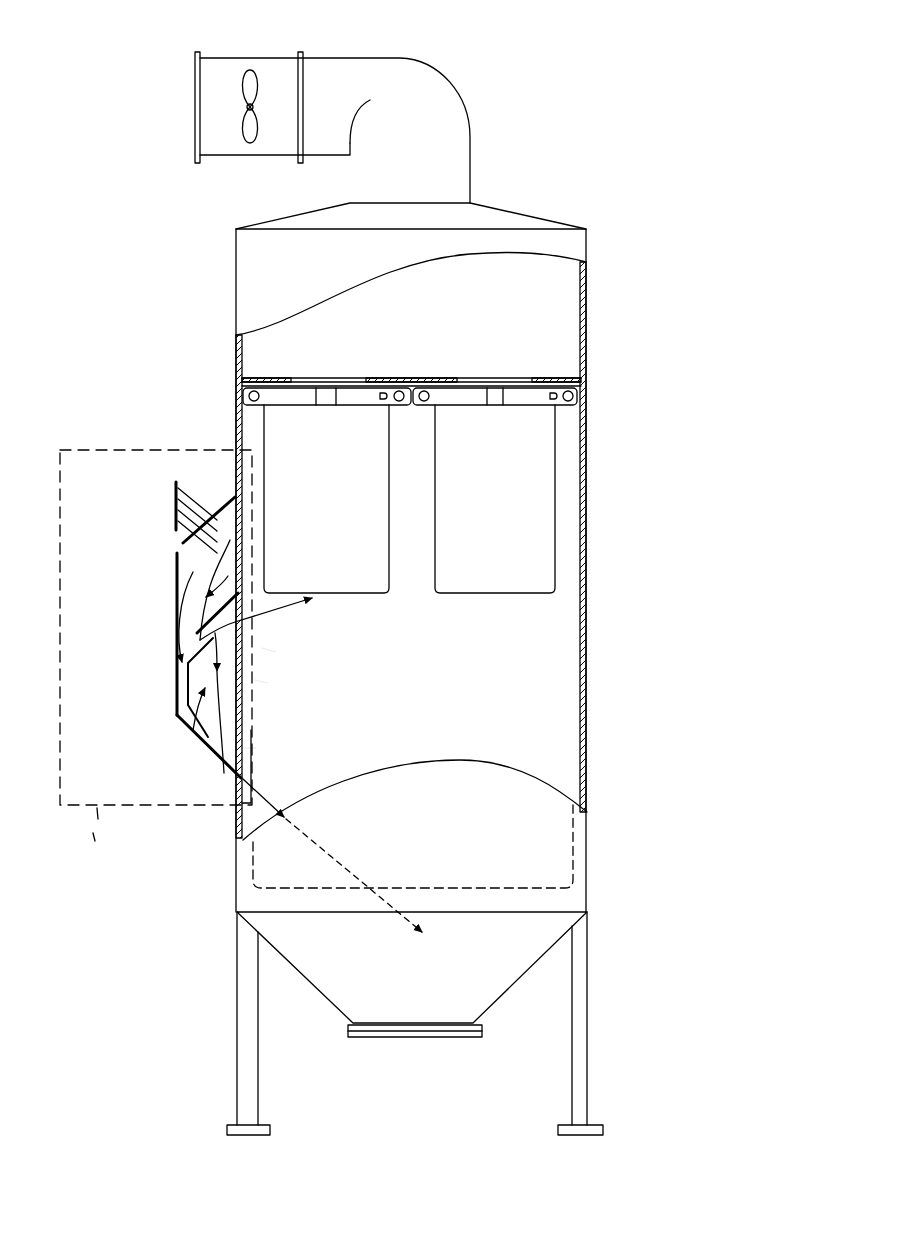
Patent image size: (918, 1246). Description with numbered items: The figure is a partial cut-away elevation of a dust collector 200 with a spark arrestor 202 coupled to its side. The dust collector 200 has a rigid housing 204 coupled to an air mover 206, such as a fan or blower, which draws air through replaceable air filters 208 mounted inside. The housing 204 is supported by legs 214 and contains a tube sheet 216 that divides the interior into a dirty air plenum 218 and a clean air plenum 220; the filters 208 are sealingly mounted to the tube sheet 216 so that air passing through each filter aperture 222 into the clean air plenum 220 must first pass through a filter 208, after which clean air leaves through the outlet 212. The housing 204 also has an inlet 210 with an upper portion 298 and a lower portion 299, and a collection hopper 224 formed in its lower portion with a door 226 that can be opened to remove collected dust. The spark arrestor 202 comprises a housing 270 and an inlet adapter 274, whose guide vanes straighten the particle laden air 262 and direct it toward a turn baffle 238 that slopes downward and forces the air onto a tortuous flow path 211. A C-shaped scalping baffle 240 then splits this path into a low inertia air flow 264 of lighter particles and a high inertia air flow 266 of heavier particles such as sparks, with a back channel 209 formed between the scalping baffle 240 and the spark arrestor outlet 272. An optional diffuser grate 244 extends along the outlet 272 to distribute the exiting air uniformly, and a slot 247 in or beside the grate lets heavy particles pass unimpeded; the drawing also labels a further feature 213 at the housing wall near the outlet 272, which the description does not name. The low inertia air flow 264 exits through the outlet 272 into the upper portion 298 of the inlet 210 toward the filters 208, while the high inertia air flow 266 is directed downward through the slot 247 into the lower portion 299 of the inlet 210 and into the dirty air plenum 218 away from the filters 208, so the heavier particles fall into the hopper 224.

The dust collector 200 is at (487, 79).
The spark arrestor 202 is at (153, 633).
The housing 204 is at (580, 335).
The air mover 206 is at (258, 57).
The air filter 208 is at (362, 596).
The back channel 209 is at (243, 670).
The inlet 210 is at (270, 683).
The tortuous flow path 211 is at (207, 603).
The outlet 212 is at (195, 108).
The lower inlet opening 213 is at (243, 702).
The legs 214 is at (571, 1035).
The tube sheet 216 is at (434, 378).
The dirty air plenum 218 is at (396, 708).
The clean air plenum 220 is at (388, 338).
The filter aperture 222 is at (496, 378).
The collection hopper 224 is at (396, 986).
The door 226 is at (404, 1038).
The turn baffle 238 is at (232, 614).
The scalping baffle 240 is at (190, 733).
The diffuser grate 244 is at (238, 718).
The slot 247 is at (251, 770).
The particle laden air 262 is at (166, 500).
The low inertia air flow 264 is at (238, 643).
The high inertia air flow 266 is at (176, 650).
The housing 270 is at (183, 676).
The outlet 272 is at (243, 732).
The inlet adapter 274 is at (137, 458).
The upper portion 298 is at (278, 652).
The lower portion 299 is at (258, 748).